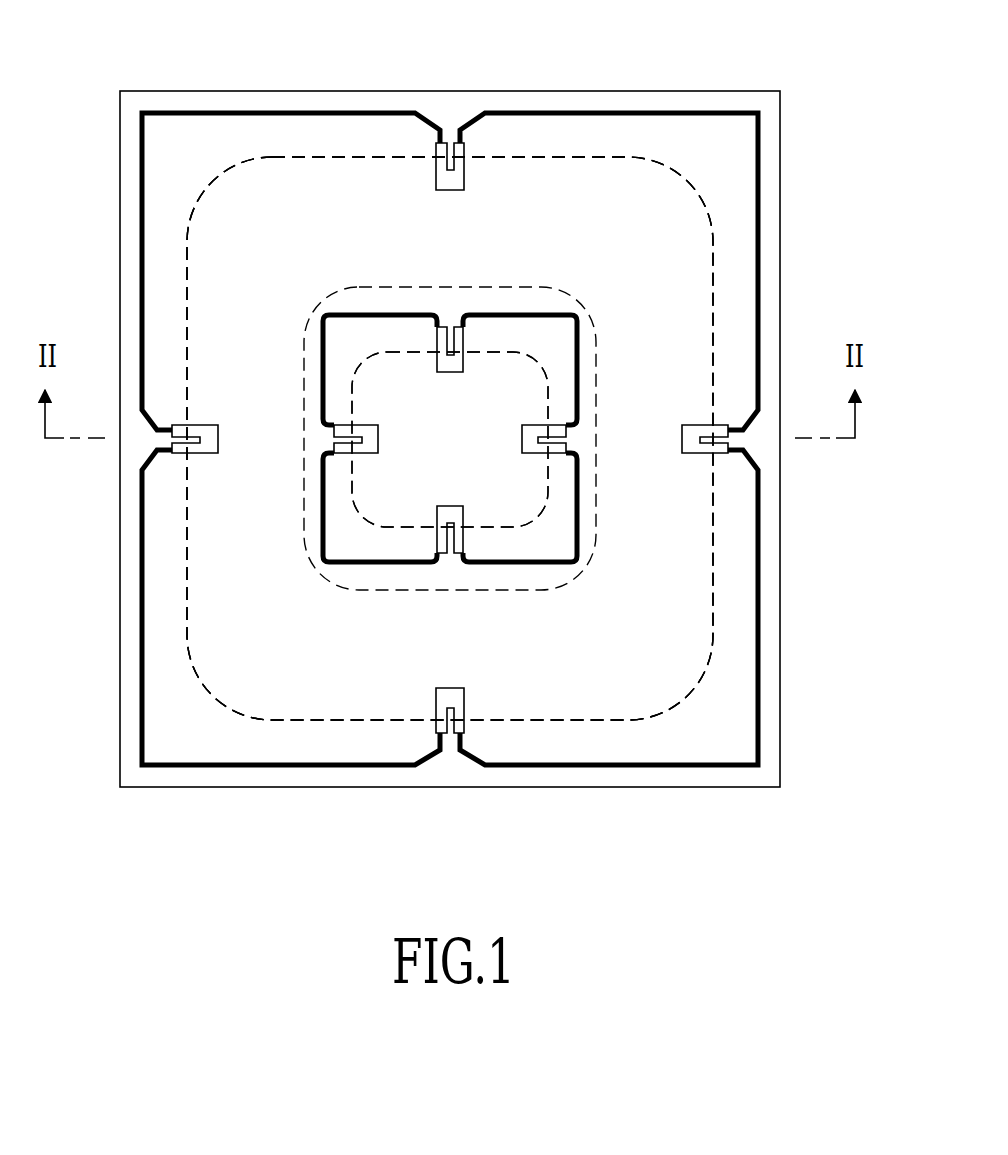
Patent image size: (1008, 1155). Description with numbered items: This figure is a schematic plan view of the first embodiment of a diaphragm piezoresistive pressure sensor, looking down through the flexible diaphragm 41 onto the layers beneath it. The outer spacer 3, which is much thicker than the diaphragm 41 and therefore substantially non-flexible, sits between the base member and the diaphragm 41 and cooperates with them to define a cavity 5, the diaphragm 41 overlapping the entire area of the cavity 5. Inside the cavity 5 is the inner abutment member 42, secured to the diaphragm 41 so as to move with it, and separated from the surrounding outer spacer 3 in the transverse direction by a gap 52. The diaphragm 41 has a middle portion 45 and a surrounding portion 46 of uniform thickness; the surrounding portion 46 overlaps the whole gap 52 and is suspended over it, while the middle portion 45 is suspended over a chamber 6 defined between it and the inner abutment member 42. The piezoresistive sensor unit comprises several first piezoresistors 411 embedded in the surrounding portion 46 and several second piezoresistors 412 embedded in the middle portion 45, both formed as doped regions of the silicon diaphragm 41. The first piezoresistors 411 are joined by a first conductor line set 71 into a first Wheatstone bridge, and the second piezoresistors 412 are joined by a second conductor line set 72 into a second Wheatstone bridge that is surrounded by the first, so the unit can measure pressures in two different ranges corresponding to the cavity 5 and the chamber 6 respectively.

The outer spacer 3 is at (170, 190).
The flexible diaphragm 41 is at (187, 86).
The first conductor line set 71 is at (637, 112).
The first piezoresistor 411 is at (452, 178).
The second conductor line set 72 is at (512, 563).
The second piezoresistor 412 is at (520, 433).
The cavity 5 is at (271, 180).
The gap 52 is at (318, 212).
The surrounding portion 46 is at (677, 247).
The inner abutment member 42 is at (495, 297).
The chamber 6 is at (507, 487).
The middle portion 45 is at (510, 393).